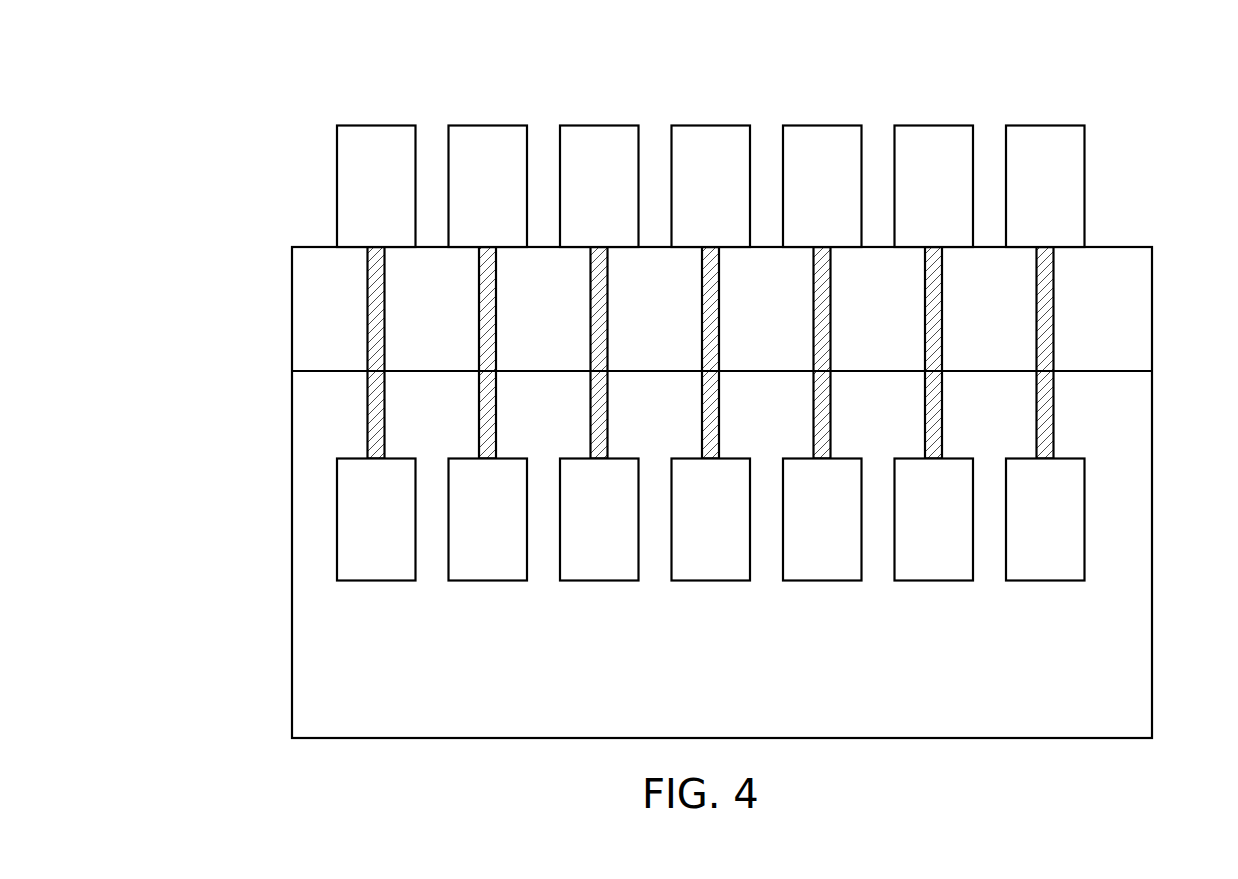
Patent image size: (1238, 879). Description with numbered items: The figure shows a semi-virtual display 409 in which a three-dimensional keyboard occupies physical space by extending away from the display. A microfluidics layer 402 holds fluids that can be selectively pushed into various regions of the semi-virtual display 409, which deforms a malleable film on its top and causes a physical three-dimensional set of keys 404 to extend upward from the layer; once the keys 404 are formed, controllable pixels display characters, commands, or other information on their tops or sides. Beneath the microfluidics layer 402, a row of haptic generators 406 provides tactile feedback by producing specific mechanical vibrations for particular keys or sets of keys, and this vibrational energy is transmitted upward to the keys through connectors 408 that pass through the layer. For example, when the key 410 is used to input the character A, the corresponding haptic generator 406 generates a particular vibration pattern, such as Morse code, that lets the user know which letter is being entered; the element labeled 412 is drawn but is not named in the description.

The microfluidics layer 402 is at (1138, 313).
The keys 404 is at (712, 139).
The haptic generators 406 is at (711, 567).
The connectors 408 is at (355, 407).
The semi-virtual display 409 is at (253, 248).
The key 410 is at (376, 187).
The bottom contact pad 412 is at (376, 520).